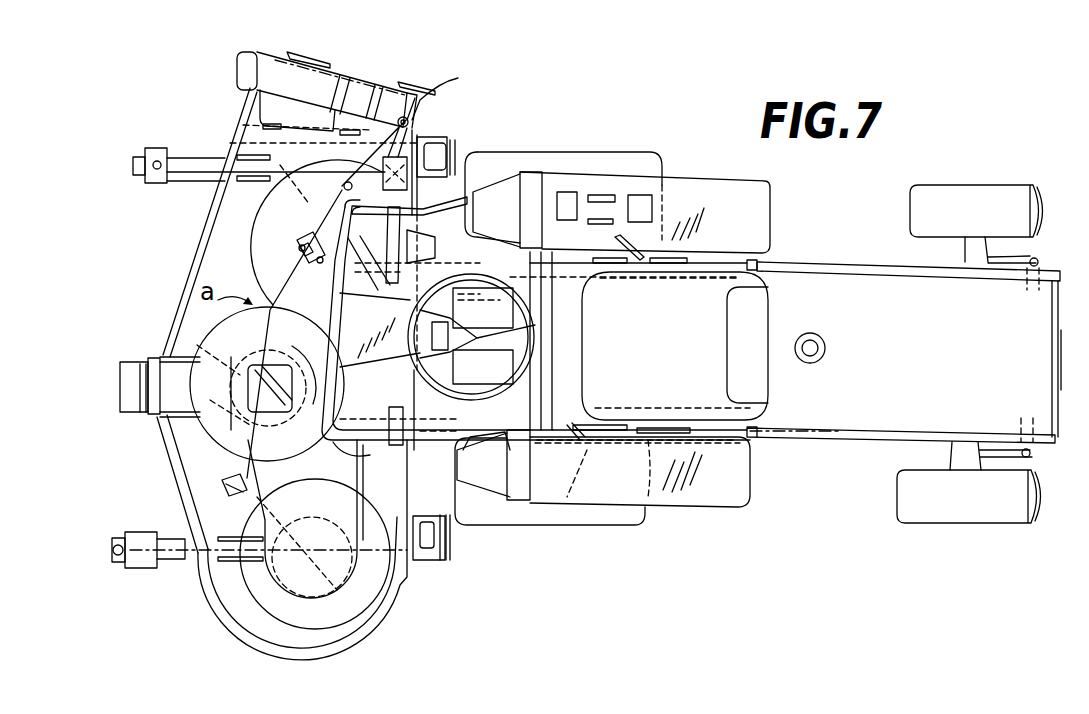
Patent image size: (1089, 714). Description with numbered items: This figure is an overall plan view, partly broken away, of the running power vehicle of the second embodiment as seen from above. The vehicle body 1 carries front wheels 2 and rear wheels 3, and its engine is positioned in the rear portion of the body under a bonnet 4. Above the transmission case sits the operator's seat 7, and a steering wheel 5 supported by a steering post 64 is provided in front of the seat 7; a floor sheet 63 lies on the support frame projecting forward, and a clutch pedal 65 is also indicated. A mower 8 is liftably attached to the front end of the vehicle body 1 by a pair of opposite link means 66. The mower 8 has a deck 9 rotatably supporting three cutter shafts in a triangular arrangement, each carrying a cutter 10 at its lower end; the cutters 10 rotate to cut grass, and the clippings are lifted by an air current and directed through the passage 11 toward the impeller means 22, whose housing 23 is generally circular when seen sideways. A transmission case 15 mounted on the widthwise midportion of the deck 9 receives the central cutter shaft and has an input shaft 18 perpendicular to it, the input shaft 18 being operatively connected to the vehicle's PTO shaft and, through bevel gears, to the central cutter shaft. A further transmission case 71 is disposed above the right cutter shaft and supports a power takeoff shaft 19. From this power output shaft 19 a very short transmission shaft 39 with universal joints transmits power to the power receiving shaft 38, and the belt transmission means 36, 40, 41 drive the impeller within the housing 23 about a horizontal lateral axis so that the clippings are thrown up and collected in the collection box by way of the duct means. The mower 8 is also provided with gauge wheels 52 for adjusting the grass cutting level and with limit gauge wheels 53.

The vehicle body 1 is at (799, 257).
The front wheels 2 is at (588, 150).
The rear wheels 3 is at (963, 196).
The bonnet 4 is at (855, 420).
The steering wheel 5 is at (562, 356).
The operator's seat 7 is at (757, 347).
The mower 8 is at (170, 309).
The mower deck 9 is at (165, 460).
The cutter 10 is at (346, 608).
The passage 11 is at (196, 245).
The transmission case 15 is at (232, 392).
The input shaft 18 is at (316, 253).
The power takeoff shaft 19 is at (430, 208).
The impeller means 22 is at (230, 50).
The housing 23 is at (237, 73).
The belt transmission means 36 is at (310, 58).
The power receiving shaft 38 is at (447, 92).
The transmission shaft 39 is at (411, 124).
The belt transmission means 40 is at (425, 92).
The belt transmission means 41 is at (388, 78).
The gauge wheels 52 is at (208, 155).
The limit gauge wheels 53 is at (458, 150).
The floor sheet 63 is at (365, 468).
The steering post 64 is at (350, 408).
The clutch pedal 65 is at (352, 452).
The link means 66 is at (301, 250).
The transmission case 71 is at (297, 238).